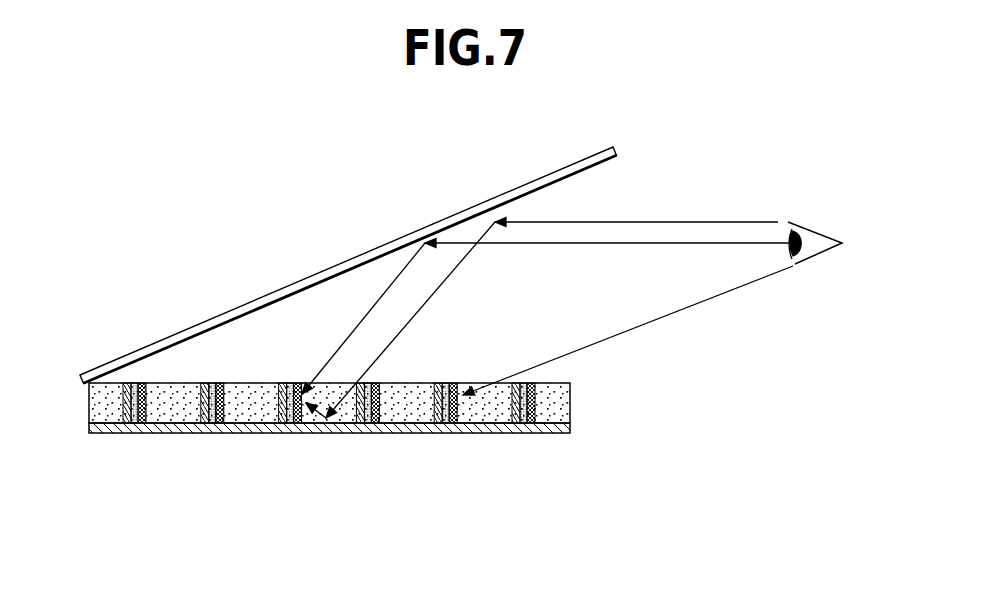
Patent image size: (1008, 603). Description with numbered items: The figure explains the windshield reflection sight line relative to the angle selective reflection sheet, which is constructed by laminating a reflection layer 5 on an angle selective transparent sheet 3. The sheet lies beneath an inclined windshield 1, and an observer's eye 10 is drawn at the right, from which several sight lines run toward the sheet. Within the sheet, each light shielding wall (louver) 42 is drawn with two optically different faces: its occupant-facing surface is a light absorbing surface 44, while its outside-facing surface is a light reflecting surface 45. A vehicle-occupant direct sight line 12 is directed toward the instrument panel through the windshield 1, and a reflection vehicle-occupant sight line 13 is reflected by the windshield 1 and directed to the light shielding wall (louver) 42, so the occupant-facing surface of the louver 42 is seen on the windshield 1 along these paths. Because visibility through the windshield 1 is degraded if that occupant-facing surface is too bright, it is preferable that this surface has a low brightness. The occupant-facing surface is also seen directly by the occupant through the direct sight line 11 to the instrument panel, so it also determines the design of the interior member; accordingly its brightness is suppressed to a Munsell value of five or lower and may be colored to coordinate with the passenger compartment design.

The windshield 1 is at (547, 175).
The angle selective transparent sheet 3 is at (569, 405).
The reflection layer 5 is at (543, 434).
The observer eye 10 is at (818, 233).
The direct sight line 11 is at (628, 330).
The vehicle-occupant direct sight line 12 is at (546, 317).
The reflection vehicle-occupant sight line 13 is at (542, 318).
The light shielding wall (louver) 42 is at (447, 424).
The light absorbing surface 44 is at (453, 426).
The light reflecting surface 45 is at (433, 412).